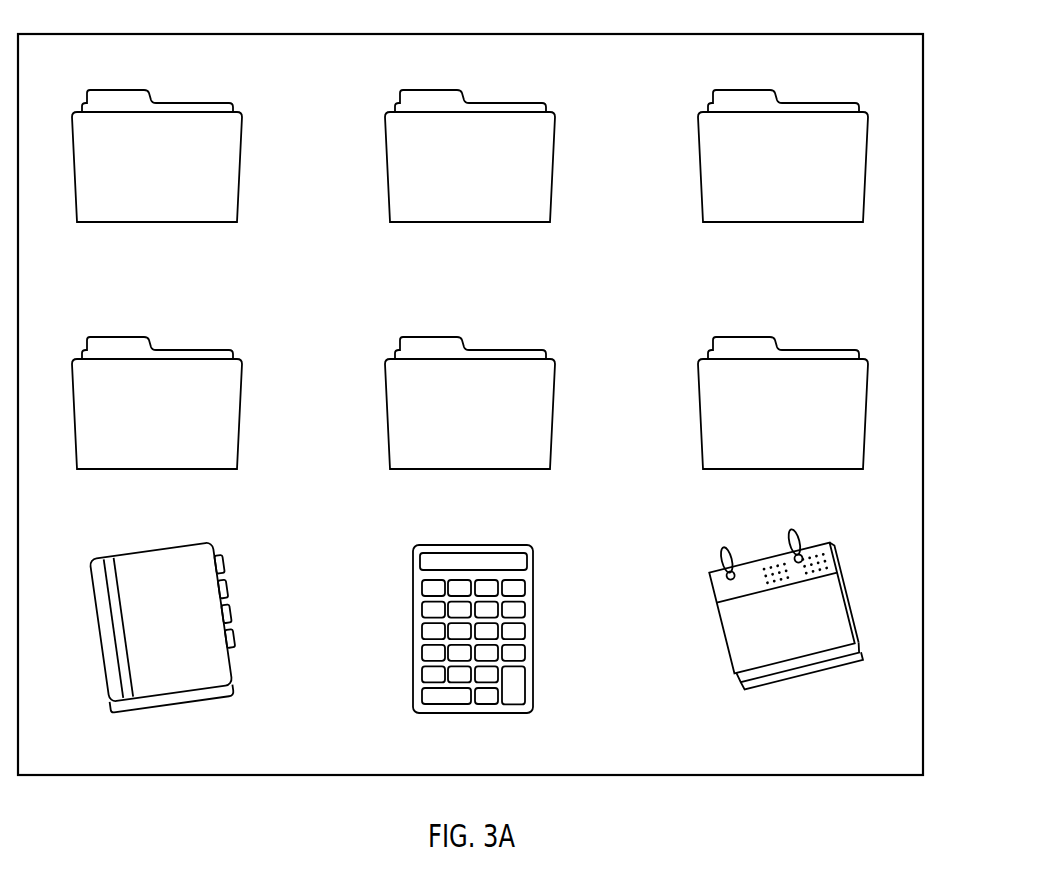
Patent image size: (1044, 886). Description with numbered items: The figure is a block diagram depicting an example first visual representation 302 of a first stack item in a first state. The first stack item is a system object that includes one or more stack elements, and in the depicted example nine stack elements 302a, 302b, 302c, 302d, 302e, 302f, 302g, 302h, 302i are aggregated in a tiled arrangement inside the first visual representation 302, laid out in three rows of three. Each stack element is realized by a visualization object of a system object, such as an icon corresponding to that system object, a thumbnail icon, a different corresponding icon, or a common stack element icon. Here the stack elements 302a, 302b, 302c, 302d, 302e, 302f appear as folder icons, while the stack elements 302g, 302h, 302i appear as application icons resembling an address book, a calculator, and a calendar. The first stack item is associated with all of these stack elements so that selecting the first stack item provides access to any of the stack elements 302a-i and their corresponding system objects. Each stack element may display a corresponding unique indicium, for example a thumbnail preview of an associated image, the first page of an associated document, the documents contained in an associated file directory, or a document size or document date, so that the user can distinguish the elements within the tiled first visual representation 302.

The first visual representation 302 is at (923, 708).
The stack element 302a is at (242, 152).
The stack element 302b is at (555, 152).
The stack element 302c is at (868, 152).
The stack element 302d is at (242, 412).
The stack element 302e is at (555, 412).
The stack element 302f is at (867, 415).
The stack element 302g is at (223, 600).
The stack element 302h is at (533, 602).
The stack element 302i is at (852, 600).